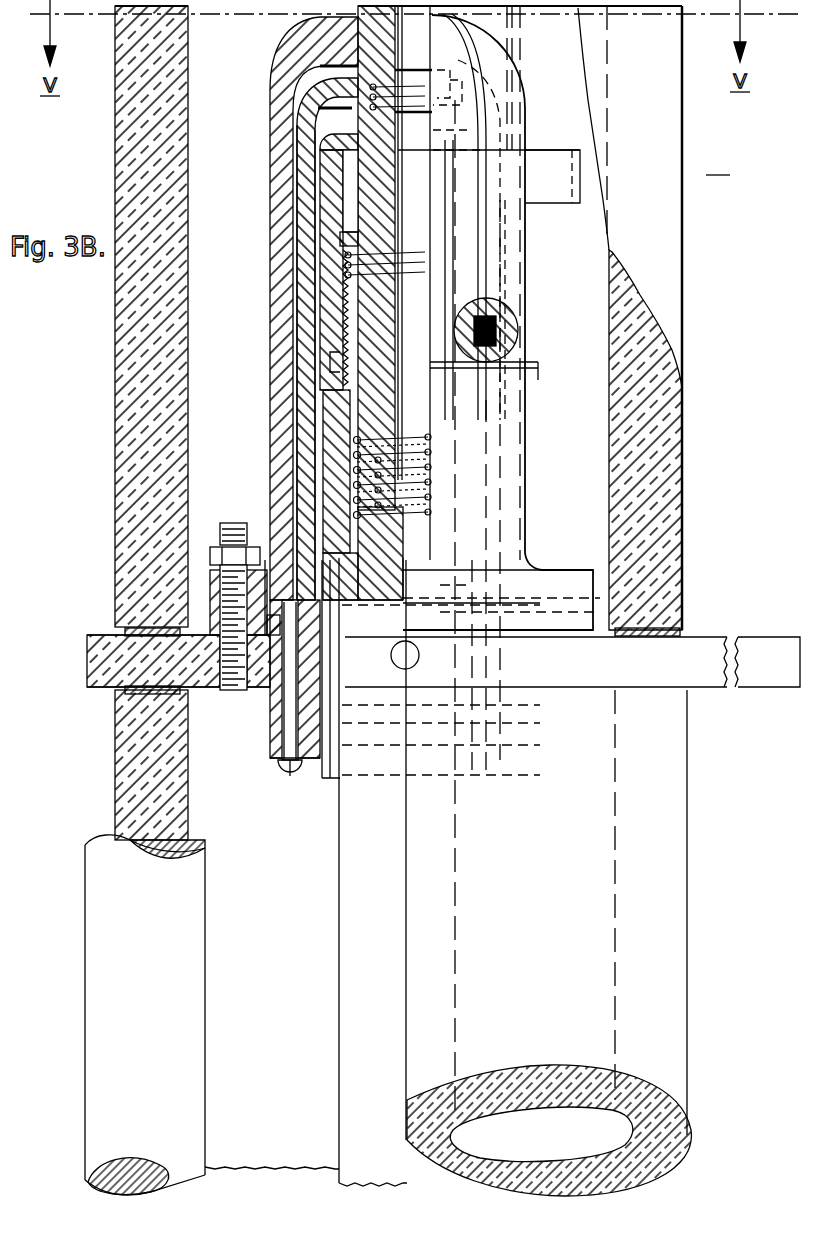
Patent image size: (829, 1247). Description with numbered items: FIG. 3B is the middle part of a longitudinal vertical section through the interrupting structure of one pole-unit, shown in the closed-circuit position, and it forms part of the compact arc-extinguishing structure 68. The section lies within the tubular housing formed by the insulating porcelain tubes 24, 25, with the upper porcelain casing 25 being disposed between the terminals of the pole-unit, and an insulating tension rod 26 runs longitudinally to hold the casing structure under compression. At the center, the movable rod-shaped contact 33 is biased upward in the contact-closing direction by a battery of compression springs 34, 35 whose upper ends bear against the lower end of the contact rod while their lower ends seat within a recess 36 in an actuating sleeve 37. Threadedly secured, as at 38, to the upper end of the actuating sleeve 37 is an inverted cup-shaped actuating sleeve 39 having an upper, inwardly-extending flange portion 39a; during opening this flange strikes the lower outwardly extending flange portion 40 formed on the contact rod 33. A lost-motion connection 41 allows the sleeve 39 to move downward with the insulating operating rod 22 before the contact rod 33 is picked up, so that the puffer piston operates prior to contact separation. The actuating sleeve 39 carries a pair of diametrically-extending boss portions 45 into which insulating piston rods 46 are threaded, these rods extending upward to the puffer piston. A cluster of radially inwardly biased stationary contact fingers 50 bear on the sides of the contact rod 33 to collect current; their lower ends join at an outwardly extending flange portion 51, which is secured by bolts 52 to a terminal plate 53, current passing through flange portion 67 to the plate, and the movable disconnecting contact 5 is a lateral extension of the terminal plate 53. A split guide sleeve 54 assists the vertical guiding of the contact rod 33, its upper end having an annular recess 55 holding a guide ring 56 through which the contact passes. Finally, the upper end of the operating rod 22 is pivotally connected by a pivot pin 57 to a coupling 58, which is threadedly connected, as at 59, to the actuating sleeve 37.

The movable disconnecting contact 5 is at (752, 650).
The insulating operating rod 22 is at (360, 880).
The insulating tube 24 is at (665, 938).
The upper porcelain casing 25 is at (682, 528).
The tension rod 26 is at (205, 945).
The movable rod-shaped contact 33 is at (378, 31).
The compression spring 34 is at (443, 63).
The compression spring 35 is at (335, 282).
The recess 36 is at (428, 512).
The actuating sleeve 37 is at (335, 417).
The threaded connection 38 is at (325, 352).
The inverted cup-shaped actuating sleeve 39 is at (345, 258).
The inwardly-extending flange portion 39a is at (345, 132).
The outwardly extending flange portion 40 is at (350, 238).
The lost-motion connection 41 is at (350, 198).
The boss portion 45 is at (570, 170).
The insulating piston rod 46 is at (555, 70).
The contact finger 50 is at (305, 45).
The outwardly extending flange portion 51 is at (270, 570).
The bolt 52 is at (240, 680).
The terminal plate 53 is at (90, 680).
The split guide sleeve 54 is at (305, 330).
The annular recess 55 is at (345, 92).
The guide ring 56 is at (335, 120).
The pivot pin 57 is at (400, 645).
The coupling 58 is at (395, 545).
The threaded connection 59 is at (360, 522).
The flange portion 67 is at (215, 615).
The arc-extinguishing structure 68 is at (718, 164).